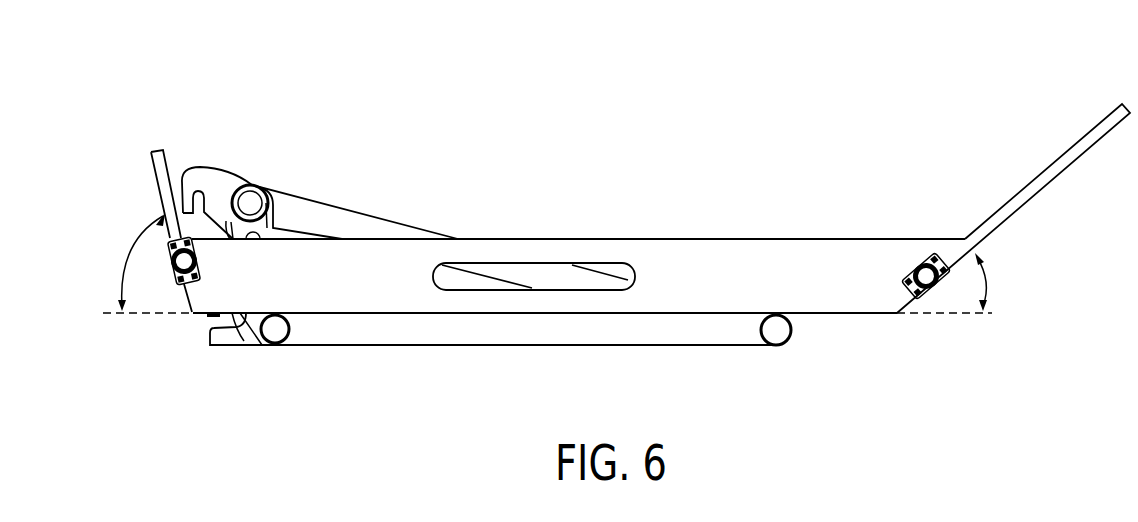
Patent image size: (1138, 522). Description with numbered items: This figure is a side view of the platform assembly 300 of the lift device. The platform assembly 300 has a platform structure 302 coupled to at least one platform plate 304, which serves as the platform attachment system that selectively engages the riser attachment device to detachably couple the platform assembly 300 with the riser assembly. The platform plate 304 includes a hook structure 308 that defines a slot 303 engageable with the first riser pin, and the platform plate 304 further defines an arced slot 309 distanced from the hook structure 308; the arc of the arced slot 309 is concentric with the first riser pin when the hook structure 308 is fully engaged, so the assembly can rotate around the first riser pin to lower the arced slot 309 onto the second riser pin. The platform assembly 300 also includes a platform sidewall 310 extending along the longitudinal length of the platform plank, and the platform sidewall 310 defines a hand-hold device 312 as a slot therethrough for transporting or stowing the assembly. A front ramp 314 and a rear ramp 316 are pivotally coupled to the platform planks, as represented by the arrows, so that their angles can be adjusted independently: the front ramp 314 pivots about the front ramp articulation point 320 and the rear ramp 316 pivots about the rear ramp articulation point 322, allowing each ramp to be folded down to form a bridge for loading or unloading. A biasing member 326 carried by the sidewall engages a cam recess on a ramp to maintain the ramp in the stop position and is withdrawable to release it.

The platform assembly 300 is at (951, 96).
The platform structure 302 is at (499, 362).
The slot 303 is at (199, 194).
The platform plate 304 is at (302, 162).
The hook structure 308 is at (187, 198).
The arced slot 309 is at (238, 328).
The platform sidewall 310 is at (578, 239).
The hand-hold device 312 is at (595, 262).
The front ramp 314 is at (1013, 241).
The rear ramp 316 is at (143, 264).
The front ramp articulation point 320 is at (897, 313).
The rear ramp articulation point 322 is at (193, 302).
The biasing member 326 is at (168, 272).